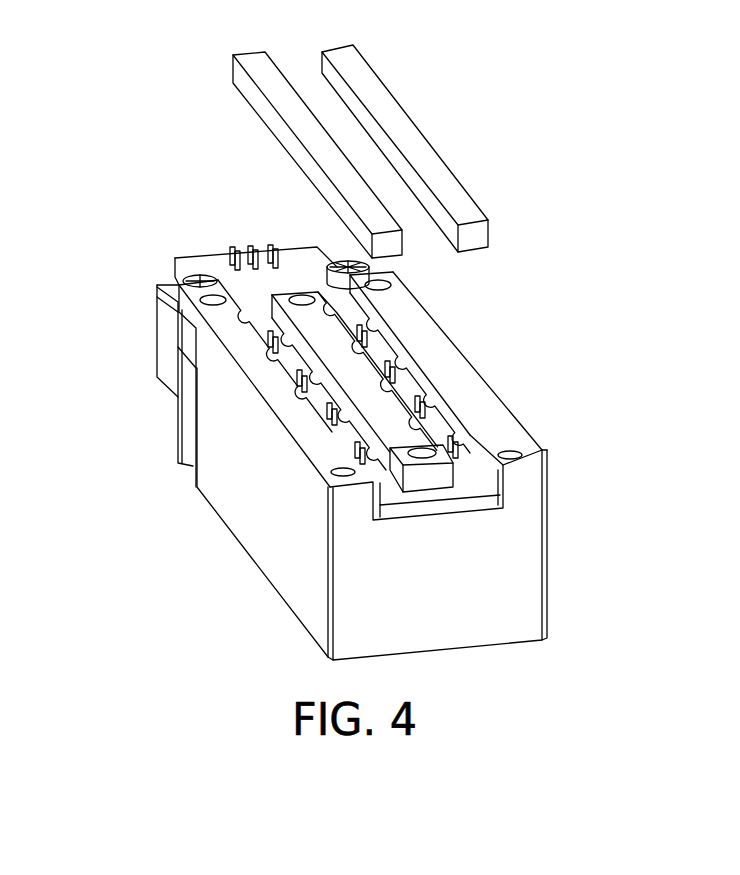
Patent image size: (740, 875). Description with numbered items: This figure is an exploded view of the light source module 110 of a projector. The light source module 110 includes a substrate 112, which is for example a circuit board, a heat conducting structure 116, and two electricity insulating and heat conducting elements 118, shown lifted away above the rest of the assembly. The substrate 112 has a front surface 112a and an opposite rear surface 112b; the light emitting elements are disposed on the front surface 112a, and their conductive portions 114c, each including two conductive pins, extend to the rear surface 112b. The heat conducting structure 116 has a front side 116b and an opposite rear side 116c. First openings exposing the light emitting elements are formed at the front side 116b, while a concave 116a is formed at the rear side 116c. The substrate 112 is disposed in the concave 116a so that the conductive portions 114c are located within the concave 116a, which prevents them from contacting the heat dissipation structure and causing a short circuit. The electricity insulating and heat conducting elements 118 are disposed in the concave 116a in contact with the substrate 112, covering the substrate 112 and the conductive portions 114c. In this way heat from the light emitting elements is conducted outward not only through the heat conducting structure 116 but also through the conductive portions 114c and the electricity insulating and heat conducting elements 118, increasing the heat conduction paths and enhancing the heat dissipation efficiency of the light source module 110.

The light source module 110 is at (349, 462).
The substrate 112 is at (361, 359).
The front surface 112a is at (438, 517).
The rear surface 112b is at (467, 476).
The conductive portion 114c is at (418, 400).
The heat conducting structure 116 is at (347, 479).
The concave 116a is at (474, 450).
The front side 116b is at (237, 569).
The rear side 116c is at (273, 392).
The electricity insulating and heat conducting element 118 is at (262, 67).